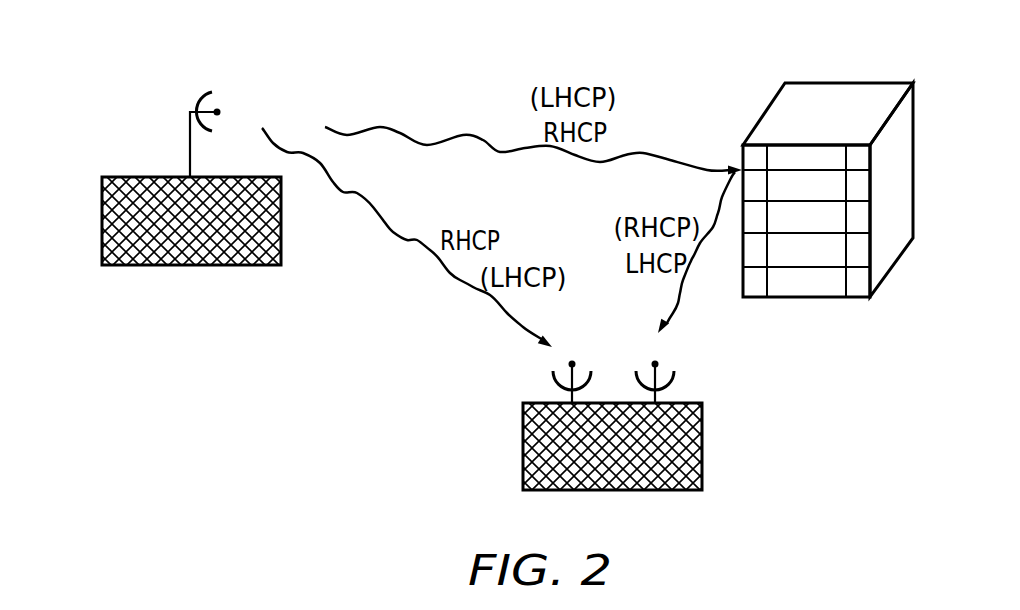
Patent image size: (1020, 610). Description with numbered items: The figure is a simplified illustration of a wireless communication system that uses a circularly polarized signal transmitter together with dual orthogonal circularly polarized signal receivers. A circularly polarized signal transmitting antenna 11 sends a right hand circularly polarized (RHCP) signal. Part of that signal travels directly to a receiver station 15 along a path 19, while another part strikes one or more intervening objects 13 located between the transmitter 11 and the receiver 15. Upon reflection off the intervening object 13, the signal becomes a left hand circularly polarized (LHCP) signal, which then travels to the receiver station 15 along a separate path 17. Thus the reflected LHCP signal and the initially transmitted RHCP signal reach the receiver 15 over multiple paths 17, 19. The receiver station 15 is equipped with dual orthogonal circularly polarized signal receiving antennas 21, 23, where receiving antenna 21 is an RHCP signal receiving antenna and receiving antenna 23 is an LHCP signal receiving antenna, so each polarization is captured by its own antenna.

The circularly polarized signal transmitting antenna 11 is at (190, 96).
The intervening object 13 is at (767, 167).
The receiver station 15 is at (558, 435).
The reflected signal path 17 is at (685, 297).
The direct signal path 19 is at (410, 241).
The RHCP signal receiving antenna 21 is at (536, 372).
The LHCP signal receiving antenna 23 is at (689, 377).